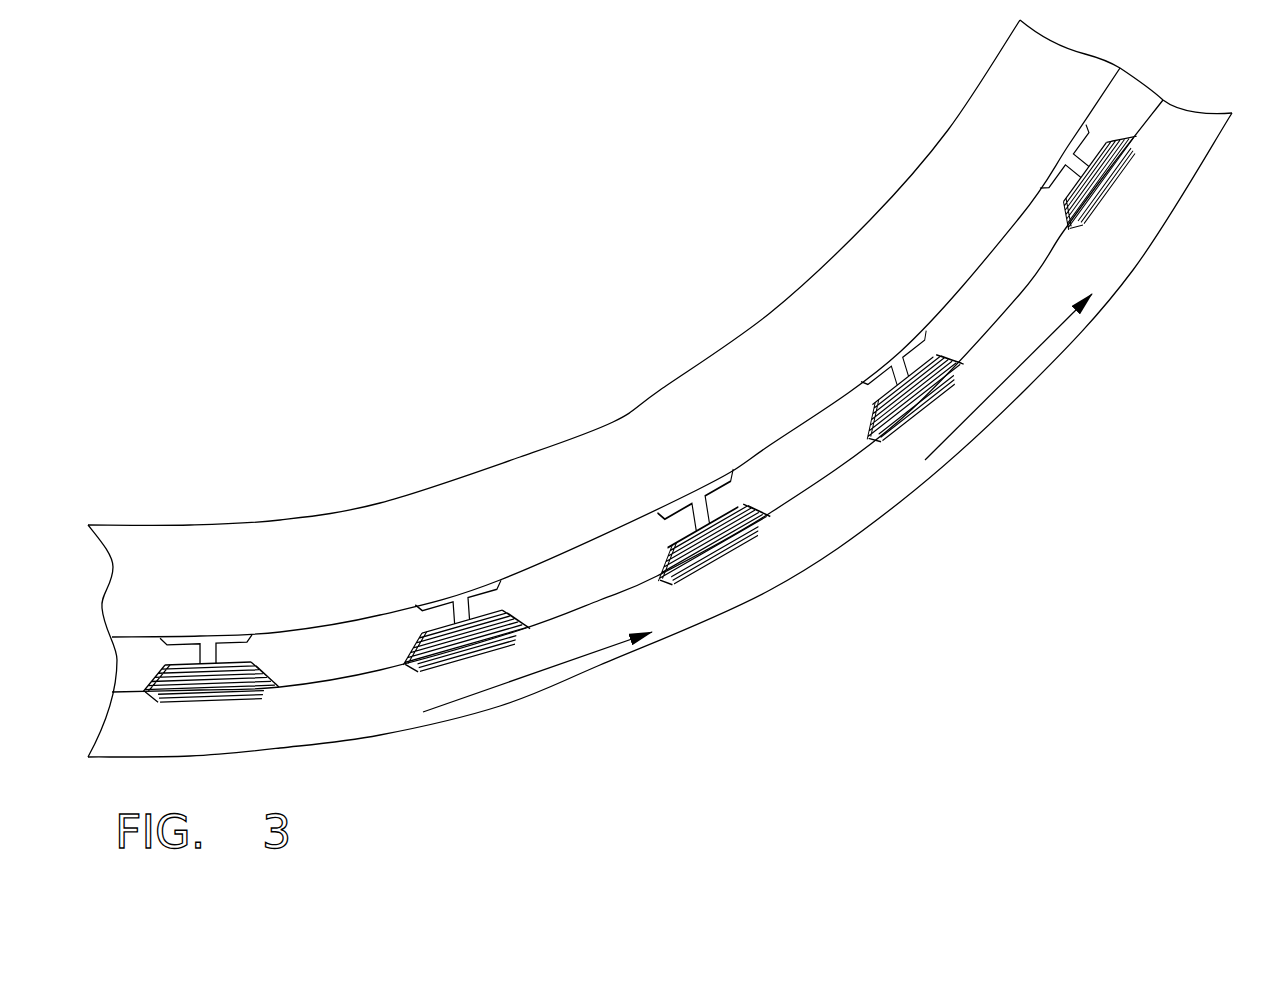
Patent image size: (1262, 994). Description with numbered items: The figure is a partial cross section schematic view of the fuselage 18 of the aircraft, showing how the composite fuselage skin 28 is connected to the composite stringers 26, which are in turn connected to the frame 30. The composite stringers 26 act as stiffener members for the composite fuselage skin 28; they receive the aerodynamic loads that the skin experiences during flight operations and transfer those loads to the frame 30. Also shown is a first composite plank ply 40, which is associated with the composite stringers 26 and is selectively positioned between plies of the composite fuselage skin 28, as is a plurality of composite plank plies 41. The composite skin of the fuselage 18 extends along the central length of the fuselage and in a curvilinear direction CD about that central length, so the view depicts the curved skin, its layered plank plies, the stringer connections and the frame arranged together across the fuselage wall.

The fuselage 18 is at (667, 404).
The composite stringers 26 is at (208, 636).
The composite fuselage skin 28 is at (379, 731).
The frame 30 is at (493, 492).
The first composite plank ply 40 is at (216, 697).
The plurality of composite plank plies 41 is at (413, 672).
The curvilinear direction CD is at (483, 695).